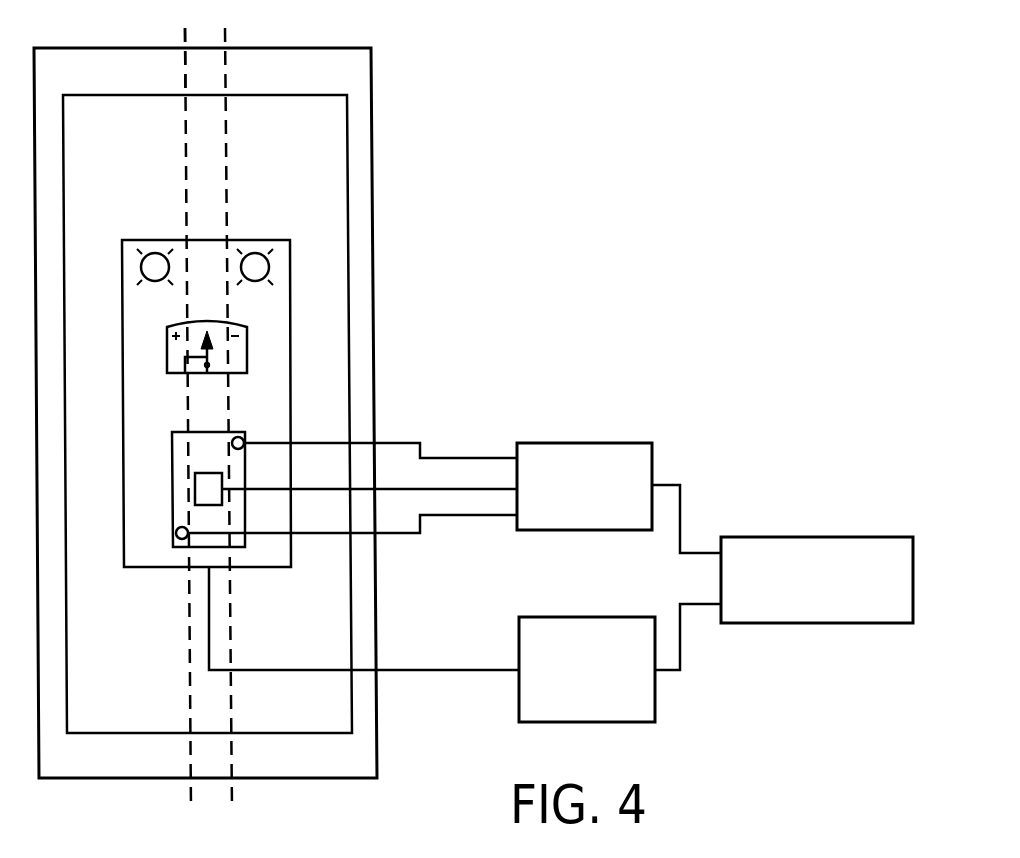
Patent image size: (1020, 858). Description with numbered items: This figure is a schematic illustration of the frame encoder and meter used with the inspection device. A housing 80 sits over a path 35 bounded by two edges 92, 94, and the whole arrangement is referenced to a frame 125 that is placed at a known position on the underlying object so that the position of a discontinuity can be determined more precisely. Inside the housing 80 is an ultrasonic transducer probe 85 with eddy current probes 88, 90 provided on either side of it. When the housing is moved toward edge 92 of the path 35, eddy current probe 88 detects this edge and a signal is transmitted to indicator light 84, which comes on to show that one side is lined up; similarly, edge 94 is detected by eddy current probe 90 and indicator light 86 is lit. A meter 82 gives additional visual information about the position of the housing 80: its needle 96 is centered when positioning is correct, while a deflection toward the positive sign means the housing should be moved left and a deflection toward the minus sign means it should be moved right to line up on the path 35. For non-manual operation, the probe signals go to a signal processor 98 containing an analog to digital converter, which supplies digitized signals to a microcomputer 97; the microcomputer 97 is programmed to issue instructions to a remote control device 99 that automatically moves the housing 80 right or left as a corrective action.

The path 35 is at (185, 33).
The edge 92 is at (185, 112).
The edge 94 is at (225, 112).
The frame 125 is at (372, 103).
The housing 80 is at (290, 387).
The indicator light 84 is at (155, 253).
The indicator light 86 is at (255, 253).
The meter 82 is at (247, 341).
The needle 96 is at (185, 357).
The eddy current probe 90 is at (240, 437).
The ultrasonic transducer probe 85 is at (195, 489).
The eddy current probe 88 is at (176, 531).
The signal processor 98 is at (575, 443).
The microcomputer 97 is at (778, 537).
The remote control device 99 is at (637, 722).